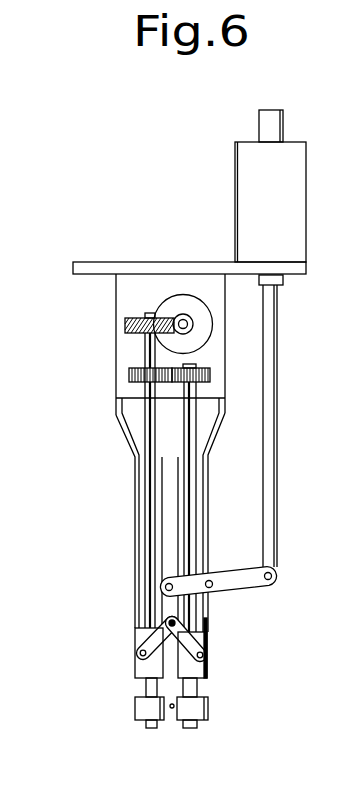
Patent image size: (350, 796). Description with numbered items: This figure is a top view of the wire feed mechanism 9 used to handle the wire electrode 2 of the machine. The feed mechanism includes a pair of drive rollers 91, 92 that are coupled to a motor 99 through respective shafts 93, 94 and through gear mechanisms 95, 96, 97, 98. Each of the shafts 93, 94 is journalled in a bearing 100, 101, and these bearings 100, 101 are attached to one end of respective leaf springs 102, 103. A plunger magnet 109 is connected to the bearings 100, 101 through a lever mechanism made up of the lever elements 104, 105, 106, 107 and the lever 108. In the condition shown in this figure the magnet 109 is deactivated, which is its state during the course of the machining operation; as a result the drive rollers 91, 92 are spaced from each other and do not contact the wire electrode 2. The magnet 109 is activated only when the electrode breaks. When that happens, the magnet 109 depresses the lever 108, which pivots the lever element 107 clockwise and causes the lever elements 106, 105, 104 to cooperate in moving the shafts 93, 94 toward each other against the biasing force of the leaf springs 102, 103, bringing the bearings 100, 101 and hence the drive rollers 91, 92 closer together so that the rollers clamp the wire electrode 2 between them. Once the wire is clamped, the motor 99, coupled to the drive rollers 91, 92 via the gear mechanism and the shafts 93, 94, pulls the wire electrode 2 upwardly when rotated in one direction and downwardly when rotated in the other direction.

The wire electrode 2 is at (172, 710).
The wire feed mechanism 9 is at (66, 262).
The drive roller 91 is at (140, 711).
The drive roller 92 is at (210, 713).
The shaft 93 is at (145, 553).
The shaft 94 is at (196, 538).
The gear mechanism 95 is at (129, 374).
The gear mechanism 96 is at (211, 380).
The gear mechanism 97 is at (126, 326).
The gear mechanism 98 is at (193, 326).
The motor 99 is at (205, 305).
The bearing 100 is at (136, 672).
The bearing 101 is at (208, 670).
The leaf spring 102 is at (135, 488).
The leaf spring 103 is at (208, 476).
The lever element 104 is at (140, 642).
The lever element 105 is at (206, 643).
The lever element 106 is at (168, 607).
The lever element 107 is at (240, 592).
The lever 108 is at (278, 392).
The plunger magnet 109 is at (235, 200).